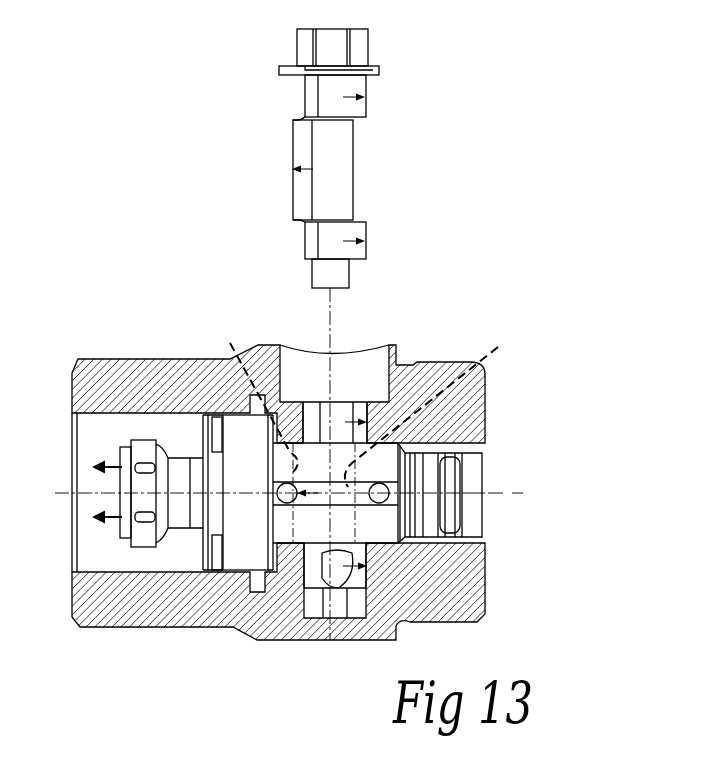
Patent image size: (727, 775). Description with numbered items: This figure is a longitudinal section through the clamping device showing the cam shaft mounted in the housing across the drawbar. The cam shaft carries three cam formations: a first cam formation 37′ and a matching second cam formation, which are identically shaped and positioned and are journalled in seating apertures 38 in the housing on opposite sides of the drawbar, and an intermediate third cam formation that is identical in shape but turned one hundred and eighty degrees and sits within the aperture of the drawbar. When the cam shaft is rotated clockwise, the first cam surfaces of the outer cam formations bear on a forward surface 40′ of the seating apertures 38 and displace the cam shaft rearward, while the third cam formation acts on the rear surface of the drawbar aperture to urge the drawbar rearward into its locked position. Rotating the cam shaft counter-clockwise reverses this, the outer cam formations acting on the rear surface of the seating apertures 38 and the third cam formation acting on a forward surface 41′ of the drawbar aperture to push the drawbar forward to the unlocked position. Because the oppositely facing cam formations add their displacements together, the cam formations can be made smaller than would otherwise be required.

The first cam formation 37′ is at (396, 87).
The seating apertures 38 is at (337, 420).
The forward surface of the seating apertures 40′ is at (310, 413).
The forward surface of the drawbar aperture 41′ is at (240, 392).